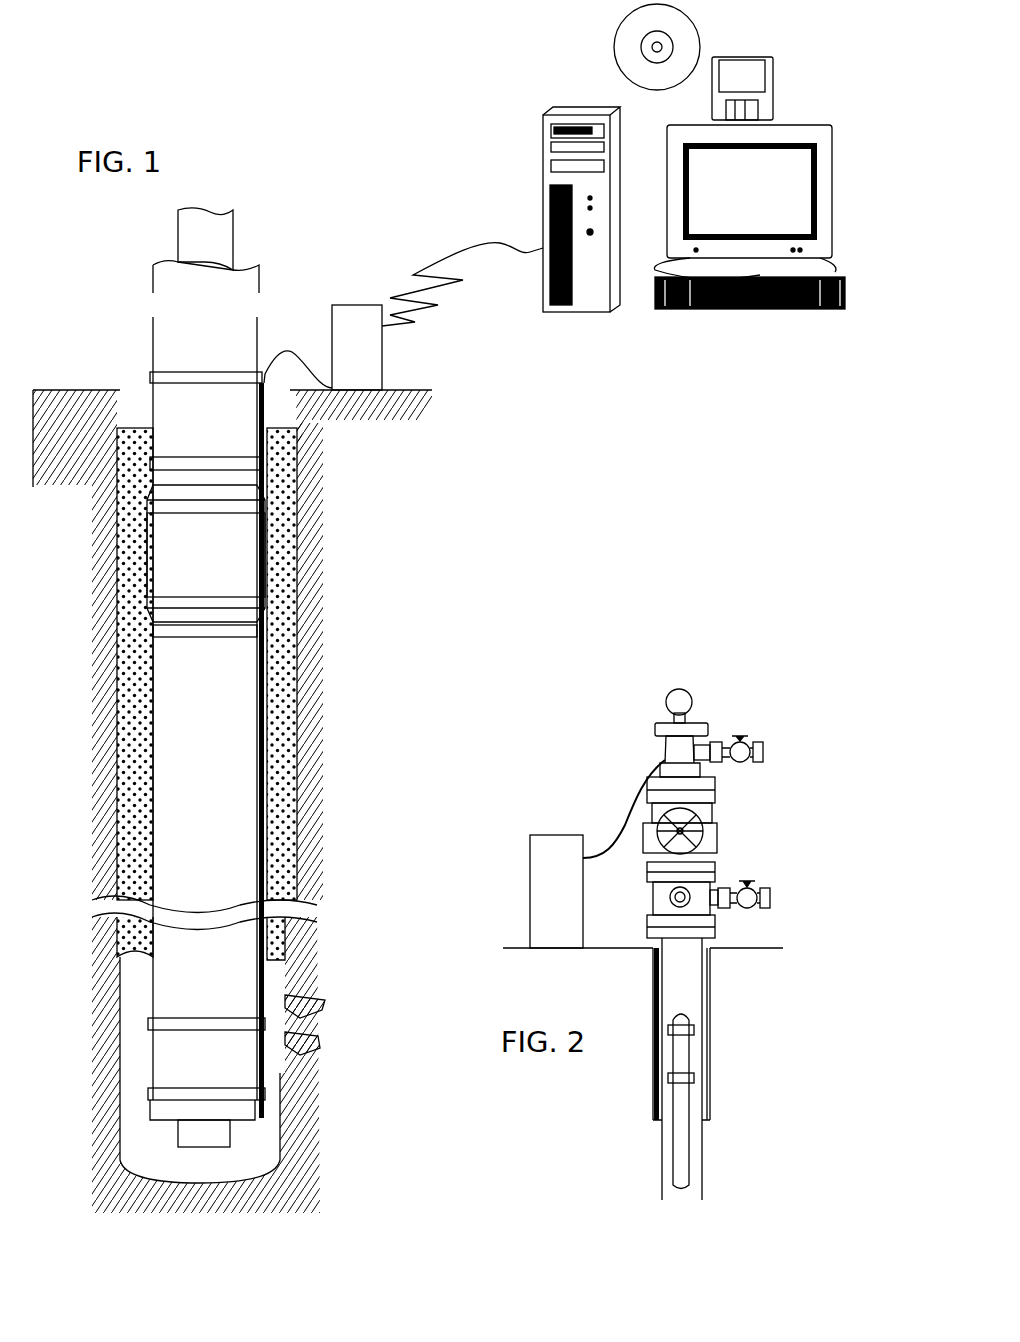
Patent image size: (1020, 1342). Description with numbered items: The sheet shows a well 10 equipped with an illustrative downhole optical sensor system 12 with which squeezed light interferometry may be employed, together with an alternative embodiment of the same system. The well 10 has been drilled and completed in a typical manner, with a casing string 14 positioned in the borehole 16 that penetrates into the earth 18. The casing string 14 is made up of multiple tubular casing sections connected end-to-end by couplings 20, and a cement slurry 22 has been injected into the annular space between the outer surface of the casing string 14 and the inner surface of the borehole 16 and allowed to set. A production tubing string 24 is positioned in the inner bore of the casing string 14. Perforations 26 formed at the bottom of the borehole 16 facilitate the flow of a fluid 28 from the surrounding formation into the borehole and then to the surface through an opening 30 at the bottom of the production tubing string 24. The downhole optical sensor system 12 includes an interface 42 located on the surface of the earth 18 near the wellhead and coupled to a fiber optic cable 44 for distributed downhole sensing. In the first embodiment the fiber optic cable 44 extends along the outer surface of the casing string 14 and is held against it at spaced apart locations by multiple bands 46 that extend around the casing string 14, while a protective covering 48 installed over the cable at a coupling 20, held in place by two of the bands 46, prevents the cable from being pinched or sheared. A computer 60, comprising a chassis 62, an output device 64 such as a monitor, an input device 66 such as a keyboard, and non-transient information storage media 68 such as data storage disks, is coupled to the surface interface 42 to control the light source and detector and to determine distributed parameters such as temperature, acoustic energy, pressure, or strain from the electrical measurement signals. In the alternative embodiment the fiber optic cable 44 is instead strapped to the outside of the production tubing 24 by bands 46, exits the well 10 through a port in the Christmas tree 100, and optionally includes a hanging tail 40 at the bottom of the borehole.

In FIG. 1, the well 10 is at (250, 177).
In FIG. 2, the well 10 is at (712, 682).
In FIG. 1, the downhole optical sensor system 12 is at (436, 116).
In FIG. 2, the downhole optical sensor system 12 is at (565, 757).
In FIG. 1, the casing string 14 is at (150, 350).
In FIG. 2, the casing string 14 is at (711, 991).
In FIG. 1, the borehole 16 is at (134, 377).
In FIG. 1, the earth 18 is at (232, 801).
In FIG. 1, the couplings 20 is at (245, 573).
In FIG. 1, the cement slurry 22 is at (306, 812).
In FIG. 1, the production tubing string 24 is at (233, 246).
In FIG. 2, the production tubing string 24 is at (690, 1157).
In FIG. 1, the perforations 26 is at (323, 960).
In FIG. 1, the fluid 28 is at (284, 1048).
In FIG. 1, the opening 30 is at (195, 1152).
In FIG. 2, the hanging tail 40 is at (671, 1188).
In FIG. 1, the interface 42 is at (384, 360).
In FIG. 2, the interface 42 is at (530, 910).
In FIG. 1, the fiber optic cable 44 is at (294, 350).
In FIG. 2, the fiber optic cable 44 is at (628, 812).
In FIG. 1, the bands 46 is at (183, 372).
In FIG. 2, the bands 46 is at (694, 1075).
In FIG. 1, the protective covering 48 is at (273, 548).
In FIG. 1, the computer 60 is at (703, 171).
In FIG. 1, the chassis 62 is at (620, 228).
In FIG. 1, the output device 64 is at (820, 262).
In FIG. 1, the input device 66 is at (820, 310).
In FIG. 1, the non-transient information storage media 68 is at (722, 57).
In FIG. 2, the Christmas tree 100 is at (785, 685).